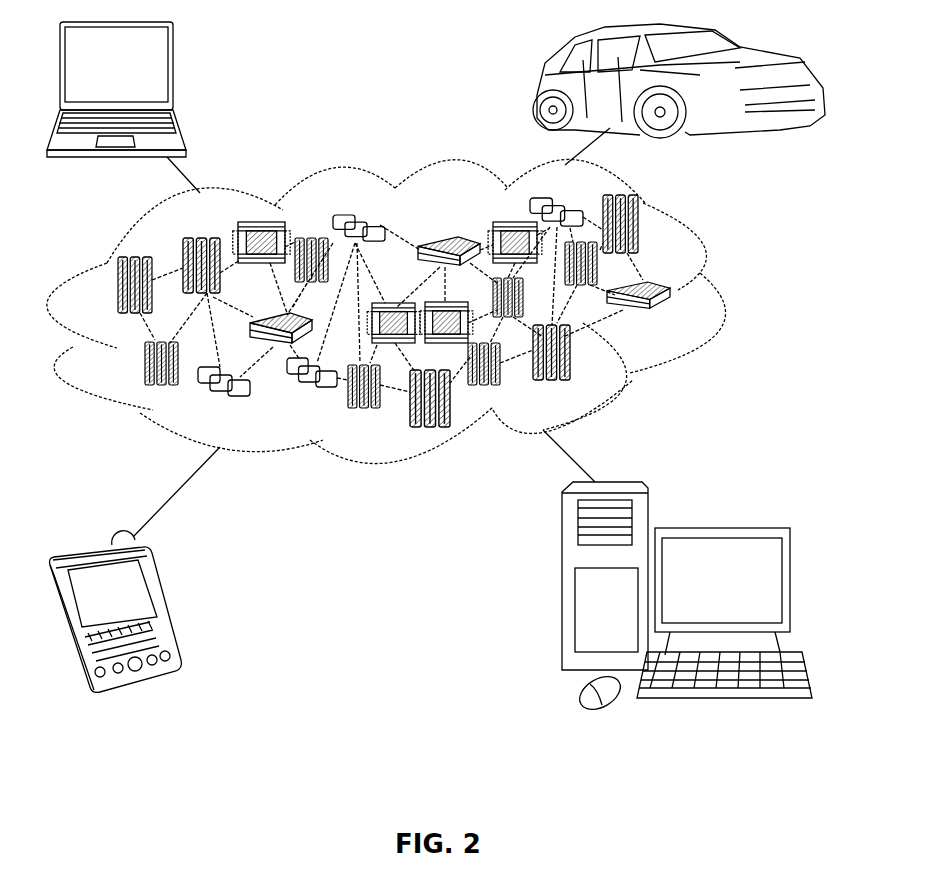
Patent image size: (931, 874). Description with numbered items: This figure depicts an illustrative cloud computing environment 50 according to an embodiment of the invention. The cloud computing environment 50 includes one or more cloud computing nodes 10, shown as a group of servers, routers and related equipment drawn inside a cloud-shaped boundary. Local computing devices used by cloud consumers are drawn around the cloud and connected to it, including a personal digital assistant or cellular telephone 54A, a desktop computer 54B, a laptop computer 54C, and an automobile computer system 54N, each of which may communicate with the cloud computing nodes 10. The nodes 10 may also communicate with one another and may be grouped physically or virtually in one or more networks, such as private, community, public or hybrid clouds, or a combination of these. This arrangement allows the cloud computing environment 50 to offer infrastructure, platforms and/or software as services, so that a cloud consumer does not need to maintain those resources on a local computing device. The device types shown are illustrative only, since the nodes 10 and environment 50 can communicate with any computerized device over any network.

The cloud computing environment 50 is at (722, 295).
The cloud computing nodes 10 is at (678, 319).
The personal digital assistant or cellular telephone 54A is at (165, 603).
The desktop computer 54B is at (720, 528).
The laptop computer 54C is at (175, 72).
The automobile computer system 54N is at (537, 80).